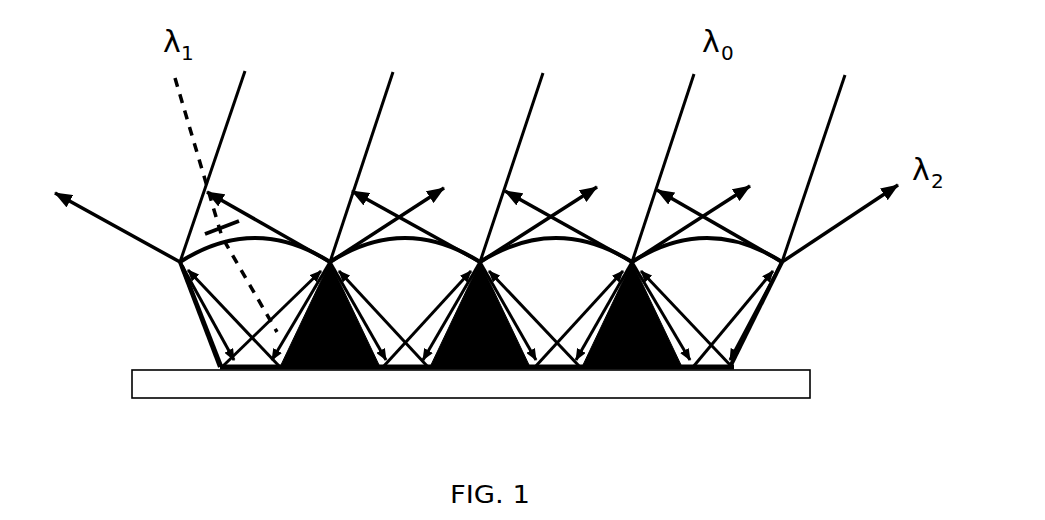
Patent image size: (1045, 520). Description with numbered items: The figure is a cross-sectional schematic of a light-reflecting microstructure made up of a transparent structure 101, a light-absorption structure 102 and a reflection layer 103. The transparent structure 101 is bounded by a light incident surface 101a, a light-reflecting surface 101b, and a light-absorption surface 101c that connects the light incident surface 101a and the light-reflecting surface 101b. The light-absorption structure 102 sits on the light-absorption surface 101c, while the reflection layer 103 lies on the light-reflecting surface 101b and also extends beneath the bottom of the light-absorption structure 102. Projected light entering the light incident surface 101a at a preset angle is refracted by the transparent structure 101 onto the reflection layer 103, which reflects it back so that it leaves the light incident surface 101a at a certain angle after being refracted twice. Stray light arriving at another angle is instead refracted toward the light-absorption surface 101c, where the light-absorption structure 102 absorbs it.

The transparent structure 101 is at (228, 297).
The light incident surface 101a is at (207, 242).
The light-reflecting surface 101b is at (218, 366).
The light-absorption surface 101c is at (198, 325).
The light-absorption structure 102 is at (320, 372).
The reflection layer 103 is at (247, 380).